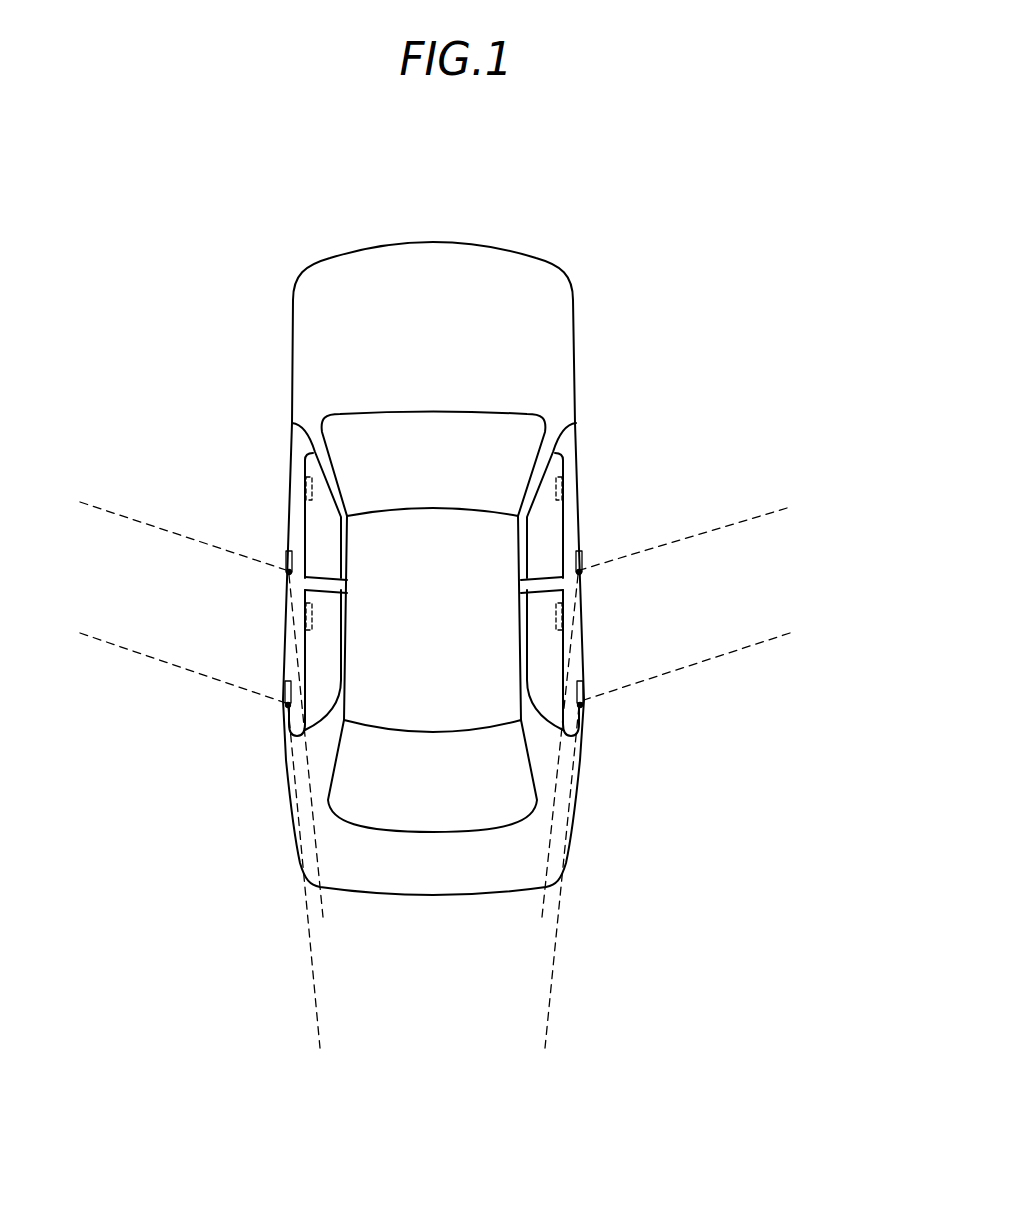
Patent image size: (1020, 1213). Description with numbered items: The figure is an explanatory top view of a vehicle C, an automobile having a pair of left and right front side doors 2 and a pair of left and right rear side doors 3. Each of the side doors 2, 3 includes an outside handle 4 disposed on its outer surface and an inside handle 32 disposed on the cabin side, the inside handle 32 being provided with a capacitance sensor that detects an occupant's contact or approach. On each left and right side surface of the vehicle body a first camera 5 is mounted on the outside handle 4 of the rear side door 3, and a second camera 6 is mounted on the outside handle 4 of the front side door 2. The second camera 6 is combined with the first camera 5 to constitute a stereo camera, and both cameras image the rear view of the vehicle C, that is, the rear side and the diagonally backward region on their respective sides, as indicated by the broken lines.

The vehicle C is at (587, 210).
The front side door 2 is at (293, 522).
The rear side door 3 is at (287, 648).
The outside handle 4 is at (286, 551).
The first camera 5 is at (284, 571).
The second camera 6 is at (283, 700).
The inside handle 32 is at (300, 478).